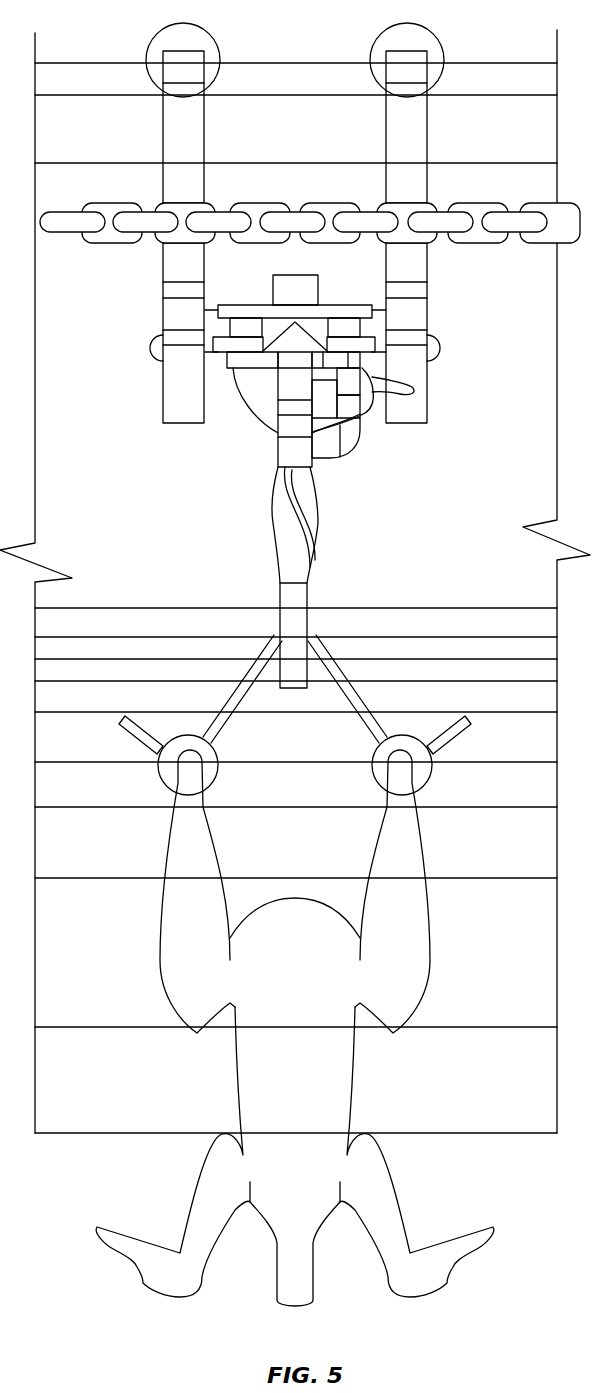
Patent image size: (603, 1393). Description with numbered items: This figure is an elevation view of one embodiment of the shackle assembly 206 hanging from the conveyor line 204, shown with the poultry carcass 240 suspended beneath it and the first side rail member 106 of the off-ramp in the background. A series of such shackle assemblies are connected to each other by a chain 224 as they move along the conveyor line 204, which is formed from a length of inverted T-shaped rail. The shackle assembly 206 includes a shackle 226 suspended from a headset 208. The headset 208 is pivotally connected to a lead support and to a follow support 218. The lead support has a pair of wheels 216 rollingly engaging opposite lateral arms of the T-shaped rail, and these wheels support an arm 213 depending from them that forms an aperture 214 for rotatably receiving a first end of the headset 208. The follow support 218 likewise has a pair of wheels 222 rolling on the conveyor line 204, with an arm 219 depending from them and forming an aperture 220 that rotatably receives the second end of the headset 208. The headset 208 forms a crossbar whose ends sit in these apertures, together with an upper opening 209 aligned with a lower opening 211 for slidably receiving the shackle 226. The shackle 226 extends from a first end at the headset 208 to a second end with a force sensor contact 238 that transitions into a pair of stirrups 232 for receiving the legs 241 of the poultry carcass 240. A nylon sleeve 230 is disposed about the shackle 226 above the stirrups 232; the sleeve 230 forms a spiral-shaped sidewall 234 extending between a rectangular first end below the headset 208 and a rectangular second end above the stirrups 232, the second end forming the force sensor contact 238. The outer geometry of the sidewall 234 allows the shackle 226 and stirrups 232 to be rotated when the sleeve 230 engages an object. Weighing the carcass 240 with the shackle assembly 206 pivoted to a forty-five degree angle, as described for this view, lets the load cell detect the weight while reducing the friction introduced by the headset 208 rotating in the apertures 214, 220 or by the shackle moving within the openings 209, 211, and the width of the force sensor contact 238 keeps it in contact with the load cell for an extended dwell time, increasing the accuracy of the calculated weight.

The first side rail member 106 is at (93, 628).
The conveyor line 204 is at (543, 85).
The shackle assembly 206 is at (463, 370).
The headset 208 is at (347, 253).
The upper opening 209 is at (318, 303).
The lower opening 211 is at (290, 443).
The arm 213 is at (417, 412).
The aperture 214 is at (430, 360).
The wheels 216 is at (416, 45).
The follow support 218 is at (130, 238).
The arm 219 is at (176, 418).
The aperture 220 is at (157, 362).
The wheels 222 is at (170, 45).
The chain 224 is at (106, 243).
The shackle 226 is at (287, 631).
The sleeve 230 is at (289, 577).
The stirrups 232 is at (128, 728).
The sidewall 234 is at (302, 497).
The force sensor contact 238 is at (297, 608).
The poultry carcass 240 is at (305, 1028).
The legs 241 is at (410, 930).